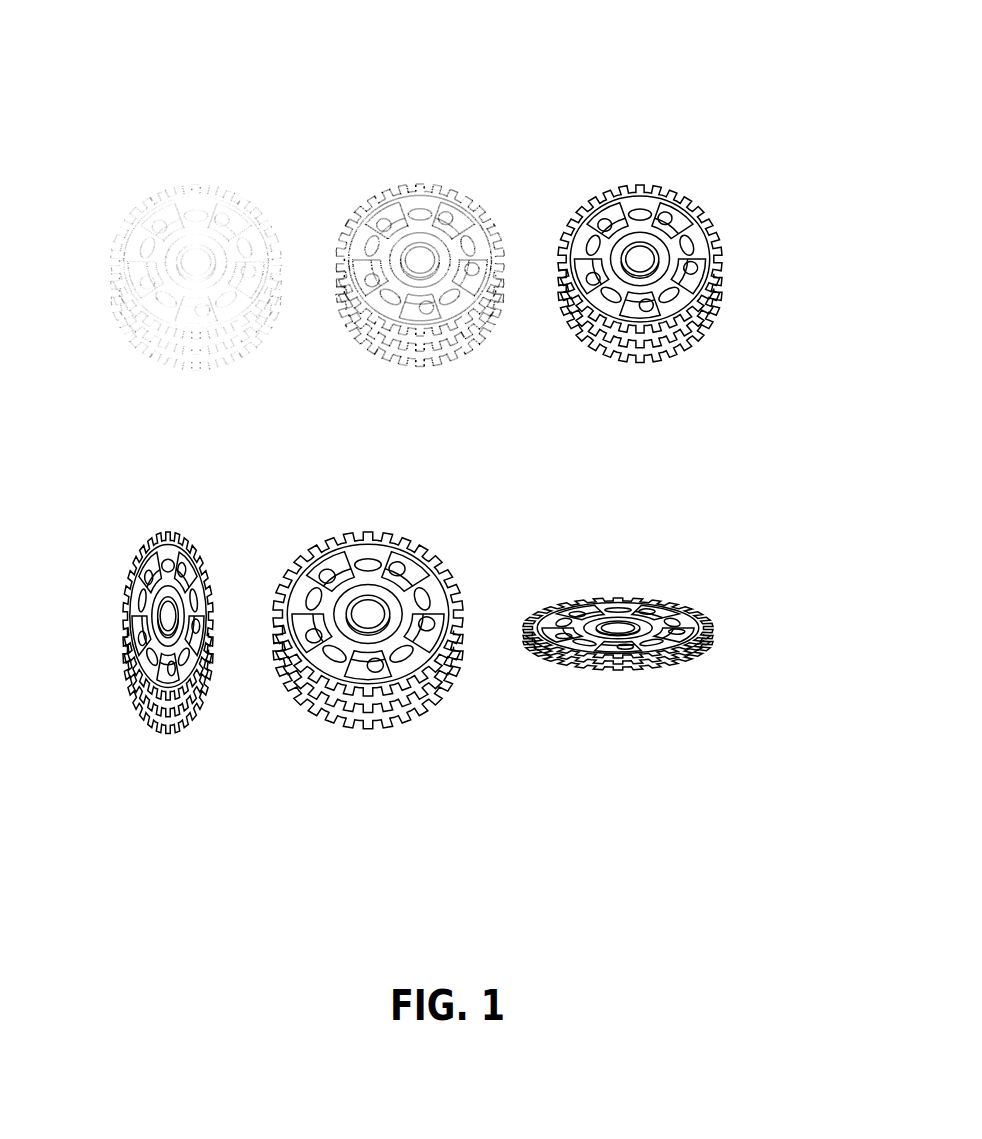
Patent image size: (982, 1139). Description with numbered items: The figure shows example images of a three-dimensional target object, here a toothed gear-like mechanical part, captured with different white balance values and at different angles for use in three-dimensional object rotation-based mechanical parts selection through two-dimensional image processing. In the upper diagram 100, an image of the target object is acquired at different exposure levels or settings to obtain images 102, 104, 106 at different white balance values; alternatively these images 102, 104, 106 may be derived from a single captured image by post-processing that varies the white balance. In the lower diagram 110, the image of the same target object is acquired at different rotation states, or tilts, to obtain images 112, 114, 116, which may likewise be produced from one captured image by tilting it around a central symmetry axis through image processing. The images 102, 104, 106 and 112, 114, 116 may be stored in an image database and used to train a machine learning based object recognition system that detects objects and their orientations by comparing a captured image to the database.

The diagram 100 is at (720, 48).
The image at a first white balance value 102 is at (158, 168).
The image at a second white balance value 104 is at (390, 168).
The image at a third white balance value 106 is at (626, 168).
The diagram 110 is at (722, 460).
The image at a first rotation state 112 is at (143, 516).
The image at a second rotation state 114 is at (373, 516).
The image at a third rotation state 116 is at (620, 553).